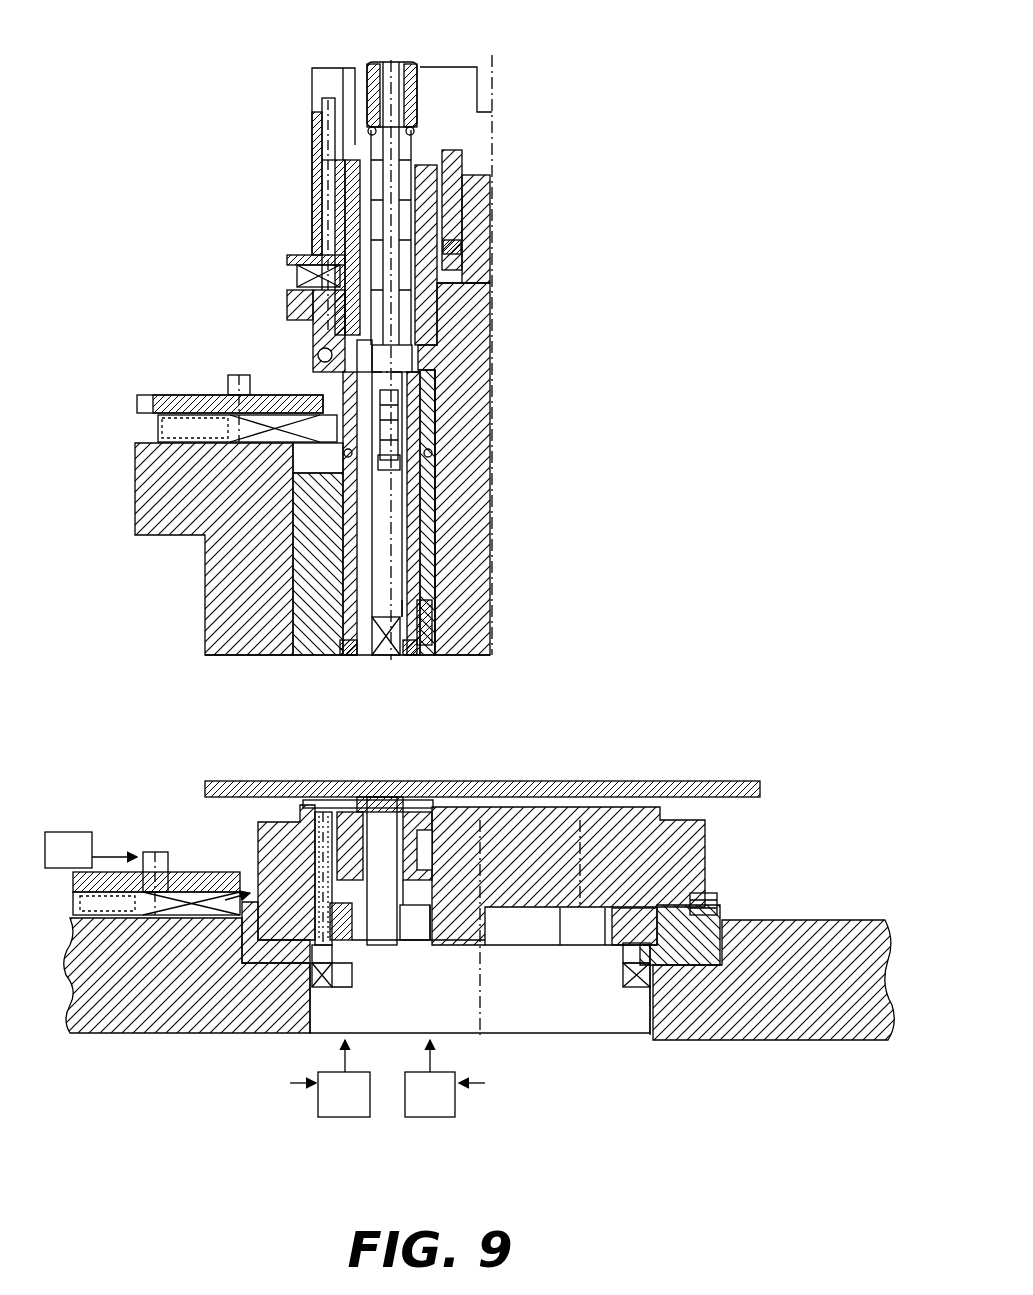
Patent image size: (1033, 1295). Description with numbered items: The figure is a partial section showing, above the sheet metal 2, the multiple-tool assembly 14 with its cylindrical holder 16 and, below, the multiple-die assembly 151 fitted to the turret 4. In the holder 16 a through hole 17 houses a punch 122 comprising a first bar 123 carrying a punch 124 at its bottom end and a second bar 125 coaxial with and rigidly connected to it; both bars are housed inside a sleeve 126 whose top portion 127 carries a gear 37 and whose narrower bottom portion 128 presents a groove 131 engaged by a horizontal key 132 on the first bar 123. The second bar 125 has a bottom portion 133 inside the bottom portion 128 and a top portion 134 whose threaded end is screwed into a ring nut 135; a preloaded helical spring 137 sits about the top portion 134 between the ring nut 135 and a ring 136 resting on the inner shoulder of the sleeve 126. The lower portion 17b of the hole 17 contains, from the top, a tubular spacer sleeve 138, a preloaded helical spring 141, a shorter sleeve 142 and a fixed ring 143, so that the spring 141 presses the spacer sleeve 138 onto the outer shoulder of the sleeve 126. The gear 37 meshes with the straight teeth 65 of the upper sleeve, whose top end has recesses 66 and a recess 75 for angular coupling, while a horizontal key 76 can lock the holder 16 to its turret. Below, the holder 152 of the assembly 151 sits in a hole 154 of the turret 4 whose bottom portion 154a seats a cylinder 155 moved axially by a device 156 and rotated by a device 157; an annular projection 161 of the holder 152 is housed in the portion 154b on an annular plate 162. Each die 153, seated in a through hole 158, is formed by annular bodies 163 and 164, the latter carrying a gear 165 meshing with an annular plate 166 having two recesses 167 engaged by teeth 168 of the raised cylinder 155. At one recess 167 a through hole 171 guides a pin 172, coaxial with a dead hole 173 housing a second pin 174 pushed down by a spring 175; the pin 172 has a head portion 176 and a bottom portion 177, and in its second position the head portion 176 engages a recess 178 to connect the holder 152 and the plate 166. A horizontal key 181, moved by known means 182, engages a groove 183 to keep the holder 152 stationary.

The sheet metal 2 is at (762, 790).
The turret 4 is at (95, 940).
The multiple-tool assembly 14 is at (510, 550).
The holder 16 is at (470, 470).
The through hole 17 is at (355, 657).
The portion of hole 17b is at (345, 650).
The gear 37 is at (455, 178).
The straight teeth 65 is at (352, 232).
The recess 66 is at (316, 120).
The recess 75 is at (305, 258).
The key 76 is at (240, 432).
The punch 122 is at (456, 356).
The first bar 123 is at (395, 527).
The punch 124 is at (388, 657).
The second bar 125 is at (437, 348).
The sleeve 126 is at (470, 283).
The top portion 127 is at (428, 214).
The bottom portion 128 is at (433, 575).
The groove 131 is at (300, 500).
The key 132 is at (245, 540).
The bottom portion 133 is at (380, 352).
The top portion 134 is at (383, 203).
The ring nut 135 is at (410, 64).
The ring 136 is at (442, 312).
The helical spring 137 is at (480, 110).
The spacer sleeve 138 is at (440, 420).
The helical spring 141 is at (430, 538).
The sleeve 142 is at (435, 630).
The fixed ring 143 is at (420, 660).
The multiple-die assembly 151 is at (748, 862).
The holder 152 is at (714, 836).
The die 153 is at (340, 832).
The hole 154 is at (640, 1000).
The bottom portion 154a is at (635, 1036).
The portion 154b is at (712, 922).
The cylinder 155 is at (312, 967).
The device 156 is at (340, 1118).
The device 157 is at (446, 1118).
The through hole 158 is at (380, 800).
The annular projection 161 is at (262, 900).
The annular plate 162 is at (300, 962).
The annular body 163 is at (416, 832).
The annular body 164 is at (567, 926).
The gear 165 is at (427, 925).
The annular plate 166 is at (712, 900).
The recess 167 is at (628, 975).
The tooth 168 is at (324, 990).
The through hole 171 is at (252, 948).
The pin 172 is at (412, 945).
The dead hole 173 is at (272, 832).
The pin 174 is at (352, 812).
The spring 175 is at (320, 852).
The head portion 176 is at (340, 965).
The bottom portion 177 is at (355, 987).
The recess 178 is at (345, 937).
The key 181 is at (75, 890).
The means 182 is at (78, 830).
The groove 183 is at (155, 853).